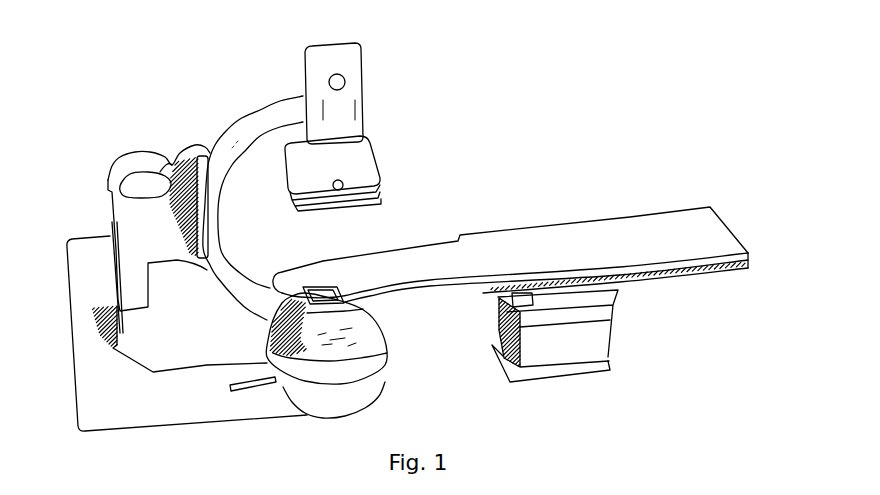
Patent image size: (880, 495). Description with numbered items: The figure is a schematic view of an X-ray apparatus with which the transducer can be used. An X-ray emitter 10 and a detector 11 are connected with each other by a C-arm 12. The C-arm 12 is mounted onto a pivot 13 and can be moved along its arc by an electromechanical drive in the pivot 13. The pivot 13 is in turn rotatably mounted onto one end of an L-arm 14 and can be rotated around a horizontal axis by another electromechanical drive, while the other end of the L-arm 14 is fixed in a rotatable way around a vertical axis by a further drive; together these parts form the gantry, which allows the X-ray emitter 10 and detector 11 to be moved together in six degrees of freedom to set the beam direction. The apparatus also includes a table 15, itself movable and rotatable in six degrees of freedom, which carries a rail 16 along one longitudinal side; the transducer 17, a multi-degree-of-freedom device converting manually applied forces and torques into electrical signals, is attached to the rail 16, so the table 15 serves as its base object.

The X-ray emitter 10 is at (390, 337).
The detector 11 is at (363, 160).
The C-arm 12 is at (250, 120).
The pivot 13 is at (107, 222).
The L-arm 14 is at (167, 380).
The table 15 is at (590, 227).
The rail 16 is at (690, 284).
The transducer 17 is at (488, 304).